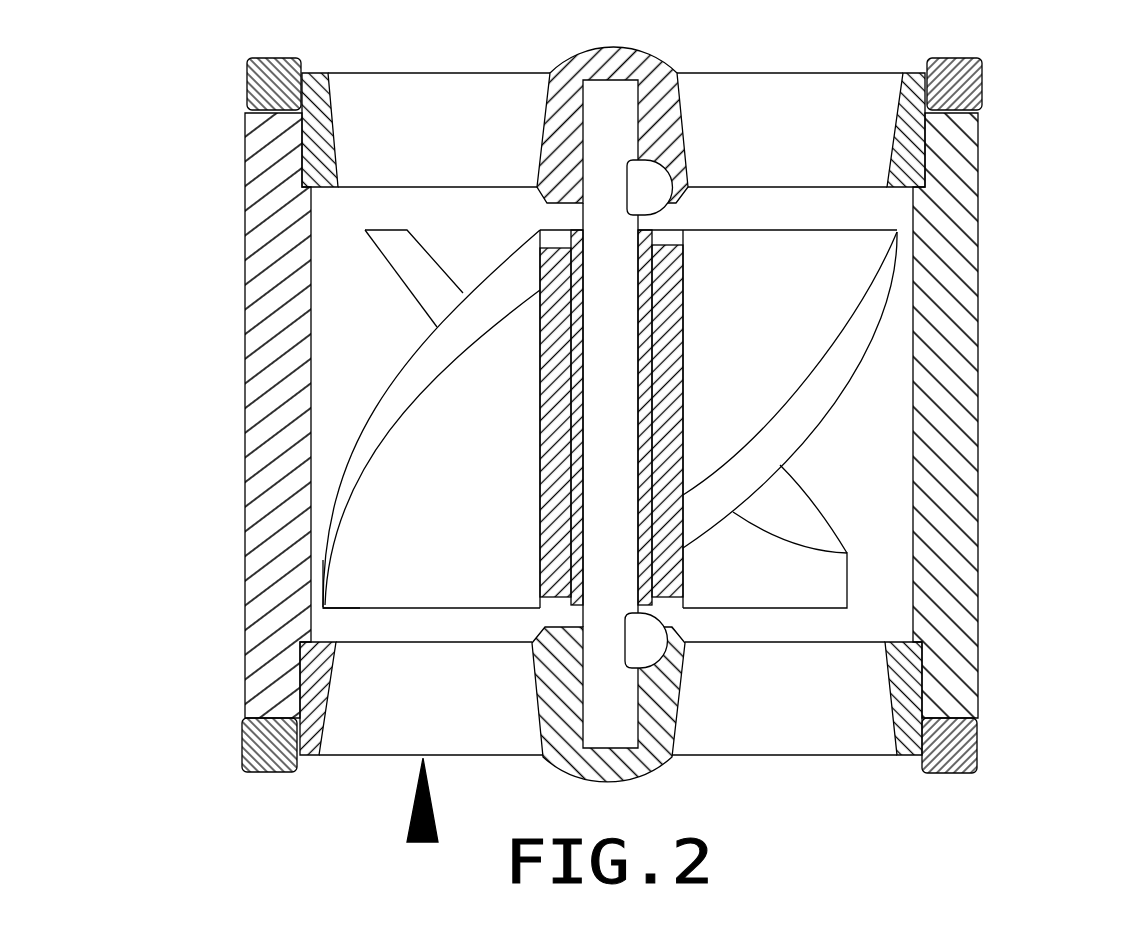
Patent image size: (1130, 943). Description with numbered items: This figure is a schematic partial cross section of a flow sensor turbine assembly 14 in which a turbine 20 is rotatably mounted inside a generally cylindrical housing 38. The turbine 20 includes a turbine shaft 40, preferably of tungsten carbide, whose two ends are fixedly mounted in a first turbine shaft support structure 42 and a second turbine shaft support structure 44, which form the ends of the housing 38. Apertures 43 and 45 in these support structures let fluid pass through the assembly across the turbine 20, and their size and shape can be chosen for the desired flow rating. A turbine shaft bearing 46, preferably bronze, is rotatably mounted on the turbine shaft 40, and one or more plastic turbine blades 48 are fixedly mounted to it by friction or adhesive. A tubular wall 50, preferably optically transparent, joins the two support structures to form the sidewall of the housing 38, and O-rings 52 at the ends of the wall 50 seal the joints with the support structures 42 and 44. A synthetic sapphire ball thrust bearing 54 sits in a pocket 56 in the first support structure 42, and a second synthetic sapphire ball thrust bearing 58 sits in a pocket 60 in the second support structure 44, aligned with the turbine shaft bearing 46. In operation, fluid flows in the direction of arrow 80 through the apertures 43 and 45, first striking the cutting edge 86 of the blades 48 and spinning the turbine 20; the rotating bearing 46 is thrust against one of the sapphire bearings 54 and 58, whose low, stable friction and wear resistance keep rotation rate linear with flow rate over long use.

The flow sensor turbine assembly 14 is at (223, 540).
The turbine 20 is at (410, 353).
The housing 38 is at (243, 280).
The turbine shaft 40 is at (630, 261).
The first turbine shaft support structure 42 is at (327, 713).
The aperture 43 is at (400, 757).
The second turbine shaft support structure 44 is at (898, 102).
The aperture 45 is at (457, 77).
The turbine shaft bearing 46 is at (653, 283).
The turbine blades 48 is at (843, 390).
The tubular wall 50 is at (978, 368).
The O-rings 52 is at (983, 68).
The synthetic sapphire ball thrust bearing 54 is at (674, 674).
The pocket 56 is at (669, 652).
The second synthetic sapphire ball thrust bearing 58 is at (678, 200).
The pocket 60 is at (682, 185).
The arrow 80 is at (433, 802).
The cutting edge 86 is at (323, 603).